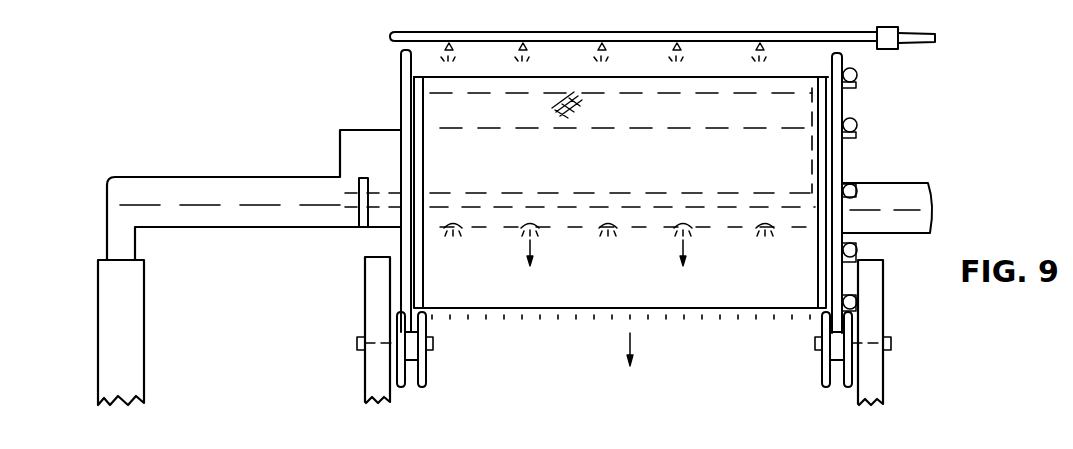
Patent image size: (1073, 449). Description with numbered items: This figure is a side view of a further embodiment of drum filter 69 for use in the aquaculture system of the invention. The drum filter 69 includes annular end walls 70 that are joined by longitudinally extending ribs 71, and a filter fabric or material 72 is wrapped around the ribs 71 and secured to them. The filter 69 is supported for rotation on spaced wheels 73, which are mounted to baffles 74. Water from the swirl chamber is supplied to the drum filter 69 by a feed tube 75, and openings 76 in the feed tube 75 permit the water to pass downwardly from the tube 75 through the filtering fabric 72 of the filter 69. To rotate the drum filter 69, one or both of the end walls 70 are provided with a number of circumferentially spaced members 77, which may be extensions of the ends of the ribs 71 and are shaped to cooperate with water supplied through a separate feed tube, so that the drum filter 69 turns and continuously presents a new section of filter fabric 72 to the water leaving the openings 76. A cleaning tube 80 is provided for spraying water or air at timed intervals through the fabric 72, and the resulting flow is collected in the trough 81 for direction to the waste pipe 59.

The waste pipe 59 is at (112, 327).
The drum filter 69 is at (956, 84).
The annular end walls 70 is at (401, 75).
The longitudinally extending ribs 71 is at (493, 77).
The filter fabric 72 is at (805, 117).
The wheels 73 is at (420, 361).
The baffles 74 is at (365, 316).
The feed tube 75 is at (928, 203).
The openings 76 is at (588, 345).
The circumferentially spaced members 77 is at (858, 77).
The water cleaning tube 80 is at (667, 33).
The trough 81 is at (355, 128).